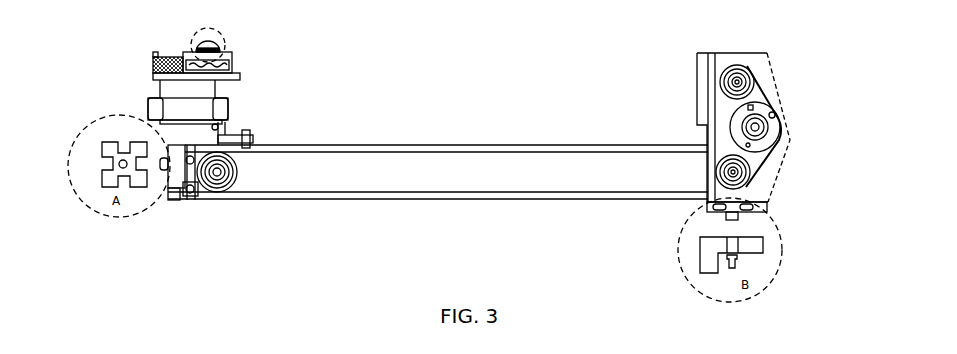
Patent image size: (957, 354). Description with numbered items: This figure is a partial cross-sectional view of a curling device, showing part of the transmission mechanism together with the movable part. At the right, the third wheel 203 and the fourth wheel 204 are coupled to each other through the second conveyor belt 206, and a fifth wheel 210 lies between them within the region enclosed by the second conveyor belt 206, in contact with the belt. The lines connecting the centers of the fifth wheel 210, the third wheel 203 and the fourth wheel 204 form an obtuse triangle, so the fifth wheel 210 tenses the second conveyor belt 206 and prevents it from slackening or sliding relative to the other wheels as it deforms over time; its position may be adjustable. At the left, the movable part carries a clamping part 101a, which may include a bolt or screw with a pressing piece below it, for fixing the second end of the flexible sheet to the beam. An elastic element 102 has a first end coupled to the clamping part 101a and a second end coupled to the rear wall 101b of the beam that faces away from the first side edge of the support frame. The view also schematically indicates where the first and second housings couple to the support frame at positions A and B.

The clamping part 101a is at (233, 25).
The rear wall 101b is at (150, 62).
The elastic element 102 is at (163, 58).
The fourth wheel 204 is at (762, 60).
The second conveyor belt 206 is at (765, 86).
The fifth wheel 210 is at (788, 108).
The third wheel 203 is at (777, 167).